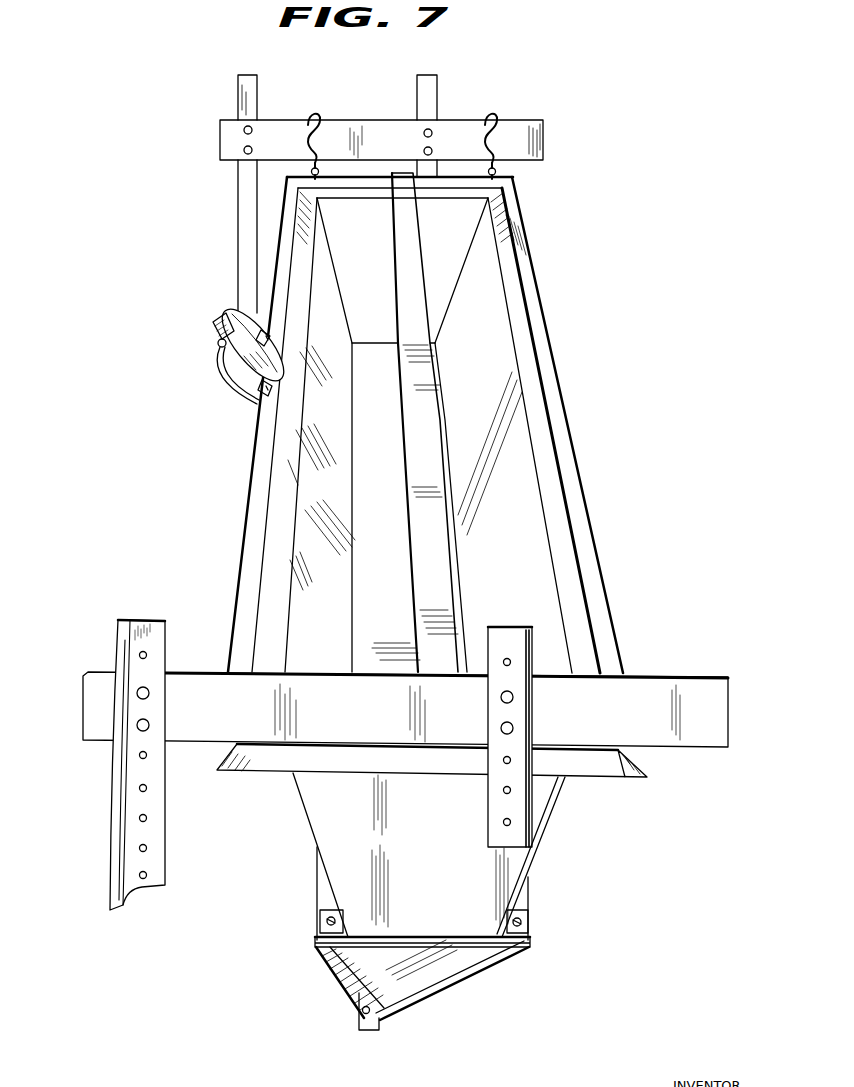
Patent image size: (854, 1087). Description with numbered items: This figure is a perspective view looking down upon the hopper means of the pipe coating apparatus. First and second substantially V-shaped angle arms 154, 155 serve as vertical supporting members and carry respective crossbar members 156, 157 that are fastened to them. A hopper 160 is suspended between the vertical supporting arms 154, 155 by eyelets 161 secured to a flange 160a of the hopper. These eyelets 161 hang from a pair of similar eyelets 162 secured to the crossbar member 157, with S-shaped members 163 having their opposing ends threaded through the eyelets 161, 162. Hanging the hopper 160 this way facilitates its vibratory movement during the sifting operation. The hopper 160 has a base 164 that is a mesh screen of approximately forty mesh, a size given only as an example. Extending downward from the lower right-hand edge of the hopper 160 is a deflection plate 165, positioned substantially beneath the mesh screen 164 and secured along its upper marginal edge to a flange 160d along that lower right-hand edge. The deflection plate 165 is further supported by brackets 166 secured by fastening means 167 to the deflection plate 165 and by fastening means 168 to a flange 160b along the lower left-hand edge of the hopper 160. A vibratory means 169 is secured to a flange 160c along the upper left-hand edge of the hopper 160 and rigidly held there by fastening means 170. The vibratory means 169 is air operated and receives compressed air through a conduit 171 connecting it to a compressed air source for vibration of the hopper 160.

The V-shaped angle arm 154 is at (112, 852).
The V-shaped angle arm 155 is at (437, 88).
The crossbar member 156 is at (712, 728).
The crossbar member 157 is at (528, 147).
The hopper 160 is at (545, 313).
The flange 160a is at (507, 175).
The flange 160b is at (323, 893).
The flange 160c is at (255, 515).
The flange 160d is at (525, 903).
The eyelet 161 is at (307, 169).
The eyelet 162 is at (322, 128).
The S-shaped member 163 is at (312, 121).
The base 164 is at (383, 507).
The deflection plate 165 is at (407, 978).
The bracket 166 is at (345, 972).
The fastening means 167 is at (358, 1005).
The fastening means 168 is at (320, 922).
The vibratory means 169 is at (225, 318).
The fastening means 170 is at (268, 337).
The conduit 171 is at (242, 405).